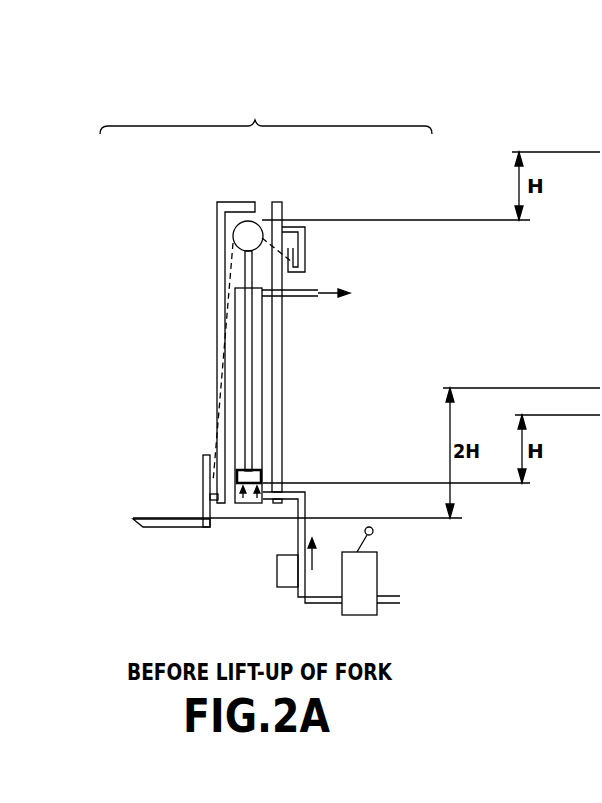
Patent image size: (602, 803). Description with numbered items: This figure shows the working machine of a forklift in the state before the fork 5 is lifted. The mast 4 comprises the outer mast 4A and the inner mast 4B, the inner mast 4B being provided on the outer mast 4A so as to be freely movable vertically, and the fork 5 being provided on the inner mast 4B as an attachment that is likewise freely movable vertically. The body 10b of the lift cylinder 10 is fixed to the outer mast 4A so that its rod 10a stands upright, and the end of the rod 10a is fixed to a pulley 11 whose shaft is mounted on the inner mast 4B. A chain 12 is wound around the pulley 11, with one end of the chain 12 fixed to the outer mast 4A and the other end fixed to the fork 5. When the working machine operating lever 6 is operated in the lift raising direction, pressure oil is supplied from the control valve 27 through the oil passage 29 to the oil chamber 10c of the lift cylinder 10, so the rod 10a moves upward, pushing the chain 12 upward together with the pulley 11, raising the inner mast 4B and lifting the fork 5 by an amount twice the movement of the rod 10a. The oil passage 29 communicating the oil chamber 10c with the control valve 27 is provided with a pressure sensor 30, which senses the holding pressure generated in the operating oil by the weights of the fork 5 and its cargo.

The mast 4 is at (266, 113).
The outer mast 4A is at (273, 200).
The inner mast 4B is at (215, 216).
The fork 5 is at (152, 520).
The working machine operating lever 6 is at (374, 533).
The lift cylinder 10 is at (235, 397).
The rod 10a is at (253, 279).
The body 10b is at (265, 433).
The oil chamber 10c is at (250, 498).
The pulley 11 is at (240, 236).
The chain 12 is at (225, 275).
The control valve 27 is at (368, 573).
The oil passage 29 is at (298, 532).
The pressure sensor 30 is at (283, 573).